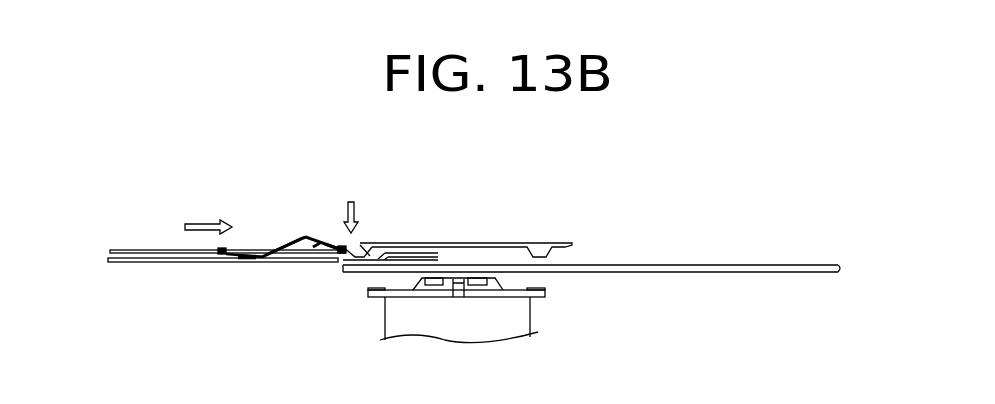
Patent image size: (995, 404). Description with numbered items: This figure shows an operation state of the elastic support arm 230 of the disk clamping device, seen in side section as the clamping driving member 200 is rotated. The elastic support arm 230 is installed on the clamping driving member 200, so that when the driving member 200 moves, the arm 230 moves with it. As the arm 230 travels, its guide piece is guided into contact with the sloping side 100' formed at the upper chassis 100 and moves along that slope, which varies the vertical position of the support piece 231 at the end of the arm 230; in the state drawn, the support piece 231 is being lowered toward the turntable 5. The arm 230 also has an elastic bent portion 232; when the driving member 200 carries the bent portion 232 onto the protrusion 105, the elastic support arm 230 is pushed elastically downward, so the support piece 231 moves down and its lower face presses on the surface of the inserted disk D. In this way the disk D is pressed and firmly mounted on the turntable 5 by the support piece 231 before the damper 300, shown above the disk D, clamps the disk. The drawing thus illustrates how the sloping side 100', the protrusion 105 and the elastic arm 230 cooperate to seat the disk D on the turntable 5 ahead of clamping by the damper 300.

The clamping driving member 200 is at (135, 252).
The upper chassis 100 is at (223, 295).
The elastic support arm 230 is at (272, 257).
The elastic bent portion 232 is at (297, 250).
The support piece 231 is at (342, 247).
The sloping side 100' is at (390, 228).
The protrusion 105 is at (338, 260).
The damper 300 is at (563, 243).
The disk D is at (700, 267).
The turntable 5 is at (517, 317).